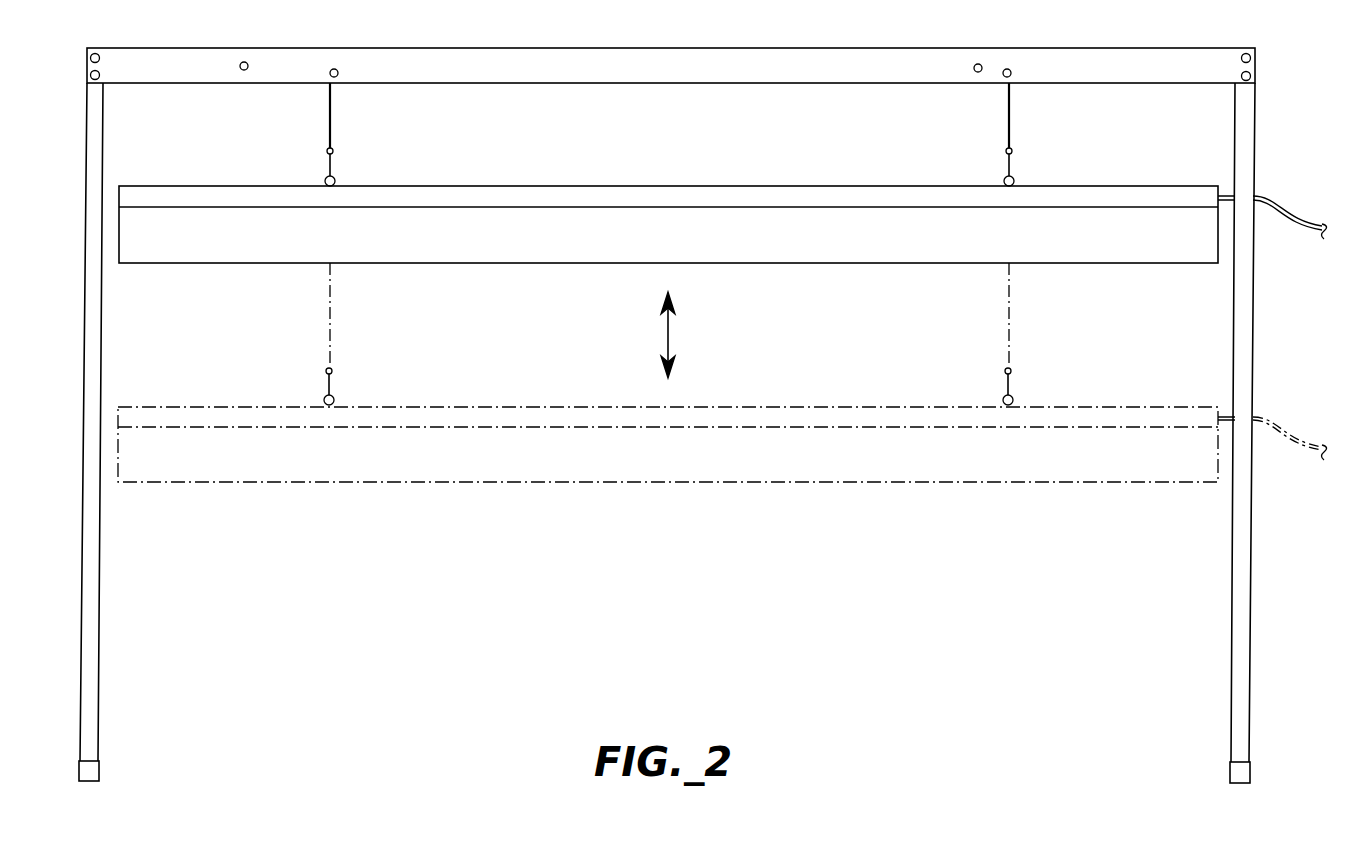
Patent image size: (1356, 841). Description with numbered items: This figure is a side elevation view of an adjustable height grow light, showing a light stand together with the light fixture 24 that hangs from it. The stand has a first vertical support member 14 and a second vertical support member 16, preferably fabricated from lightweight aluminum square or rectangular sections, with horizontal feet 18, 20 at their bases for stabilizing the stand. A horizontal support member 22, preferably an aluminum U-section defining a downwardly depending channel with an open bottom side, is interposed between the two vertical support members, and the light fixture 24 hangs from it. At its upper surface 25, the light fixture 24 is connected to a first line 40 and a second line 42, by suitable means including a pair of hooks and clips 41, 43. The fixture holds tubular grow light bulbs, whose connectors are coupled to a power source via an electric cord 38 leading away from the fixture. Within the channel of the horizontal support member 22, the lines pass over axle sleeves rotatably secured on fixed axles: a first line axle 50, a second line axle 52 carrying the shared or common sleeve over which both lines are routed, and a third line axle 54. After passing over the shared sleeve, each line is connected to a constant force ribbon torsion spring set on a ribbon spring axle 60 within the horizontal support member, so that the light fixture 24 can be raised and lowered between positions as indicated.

The first vertical support member 14 is at (95, 158).
The second vertical support member 16 is at (1252, 148).
The horizontal foot 18 is at (92, 770).
The horizontal foot 20 is at (1242, 772).
The horizontal support member 22 is at (710, 50).
The light fixture 24 is at (823, 255).
The upper surface 25 is at (607, 184).
The electric cord 38 is at (1290, 218).
The first line 40 is at (332, 122).
The hook and clip 41 is at (333, 168).
The second line 42 is at (1012, 122).
The hook and clip 43 is at (1012, 170).
The first line axle 50 is at (334, 68).
The second line axle 52 is at (980, 62).
The third line axle 54 is at (1007, 68).
The ribbon spring axle 60 is at (244, 60).